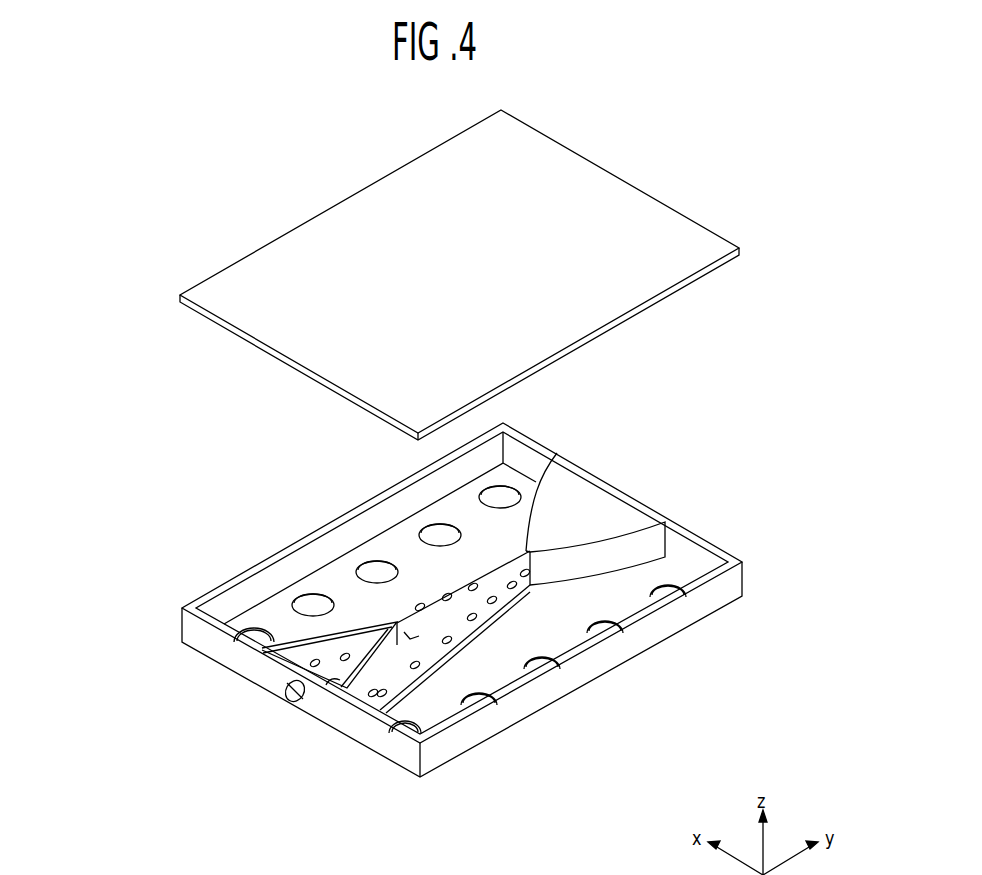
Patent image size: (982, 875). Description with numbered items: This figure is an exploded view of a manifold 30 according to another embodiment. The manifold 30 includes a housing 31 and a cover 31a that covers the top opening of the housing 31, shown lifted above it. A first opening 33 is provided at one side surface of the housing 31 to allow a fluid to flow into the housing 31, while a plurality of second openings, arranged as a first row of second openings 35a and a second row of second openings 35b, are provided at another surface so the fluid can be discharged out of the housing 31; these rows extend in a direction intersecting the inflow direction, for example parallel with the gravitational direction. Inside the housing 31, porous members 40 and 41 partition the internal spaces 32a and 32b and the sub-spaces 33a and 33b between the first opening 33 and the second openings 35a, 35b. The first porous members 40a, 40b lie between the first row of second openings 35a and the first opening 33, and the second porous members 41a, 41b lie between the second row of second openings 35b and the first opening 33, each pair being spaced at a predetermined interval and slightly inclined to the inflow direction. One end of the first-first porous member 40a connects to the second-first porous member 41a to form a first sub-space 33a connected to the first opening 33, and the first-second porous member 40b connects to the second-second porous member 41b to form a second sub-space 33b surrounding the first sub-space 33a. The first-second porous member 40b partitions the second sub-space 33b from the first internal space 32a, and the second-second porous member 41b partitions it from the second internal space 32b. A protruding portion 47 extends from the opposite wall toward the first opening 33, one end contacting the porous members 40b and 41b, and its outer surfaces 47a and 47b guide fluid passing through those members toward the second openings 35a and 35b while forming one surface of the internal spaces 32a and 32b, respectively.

The manifold 30 is at (744, 352).
The housing 31 is at (720, 545).
The cover 31a is at (683, 234).
The first internal space 32a is at (327, 584).
The second internal space 32b is at (620, 596).
The first opening 33 is at (287, 703).
The first sub-space 33a is at (322, 684).
The second sub-space 33b is at (410, 638).
The first row of second openings 35a is at (237, 637).
The second row of second openings 35b is at (388, 728).
The first porous member 40 is at (160, 498).
The first-first porous member 40a is at (266, 628).
The first-second porous member 40b is at (333, 634).
The second porous member 41 is at (610, 737).
The second-first porous member 41a is at (413, 681).
The second-second porous member 41b is at (447, 627).
The protruding portion 47 is at (615, 497).
The outer surface of protruding portion 47a is at (557, 453).
The outer surface of protruding portion 47b is at (640, 545).